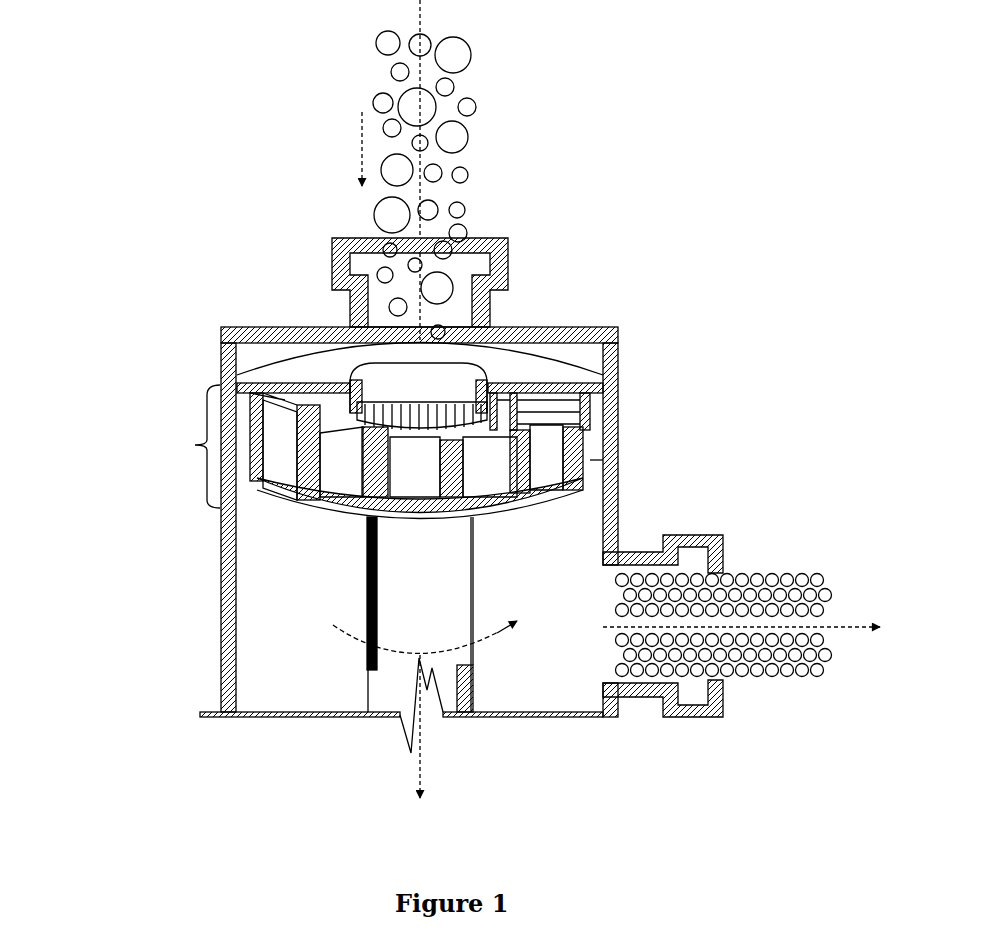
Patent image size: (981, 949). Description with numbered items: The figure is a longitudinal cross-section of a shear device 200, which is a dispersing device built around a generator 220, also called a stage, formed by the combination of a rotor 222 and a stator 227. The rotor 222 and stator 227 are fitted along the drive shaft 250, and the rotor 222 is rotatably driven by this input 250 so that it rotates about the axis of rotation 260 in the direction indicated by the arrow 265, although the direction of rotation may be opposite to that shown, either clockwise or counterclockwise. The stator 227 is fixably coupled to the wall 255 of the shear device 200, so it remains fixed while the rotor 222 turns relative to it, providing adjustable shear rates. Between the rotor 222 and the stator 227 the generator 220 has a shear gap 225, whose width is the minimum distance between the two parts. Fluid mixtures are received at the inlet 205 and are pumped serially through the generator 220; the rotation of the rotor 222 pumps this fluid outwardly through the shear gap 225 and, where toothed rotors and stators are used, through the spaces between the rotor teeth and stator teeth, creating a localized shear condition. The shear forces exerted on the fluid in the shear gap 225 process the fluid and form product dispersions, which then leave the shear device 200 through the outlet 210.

The shear device 200 is at (157, 193).
The inlet 205 is at (468, 218).
The outlet 210 is at (842, 637).
The generator 220 is at (179, 446).
The rotor 222 is at (597, 437).
The shear gap 225 is at (505, 412).
The stator 227 is at (575, 372).
The drive shaft 250 is at (378, 691).
The wall 255 is at (217, 333).
The axis of rotation 260 is at (410, 768).
The arrow 265 is at (487, 645).